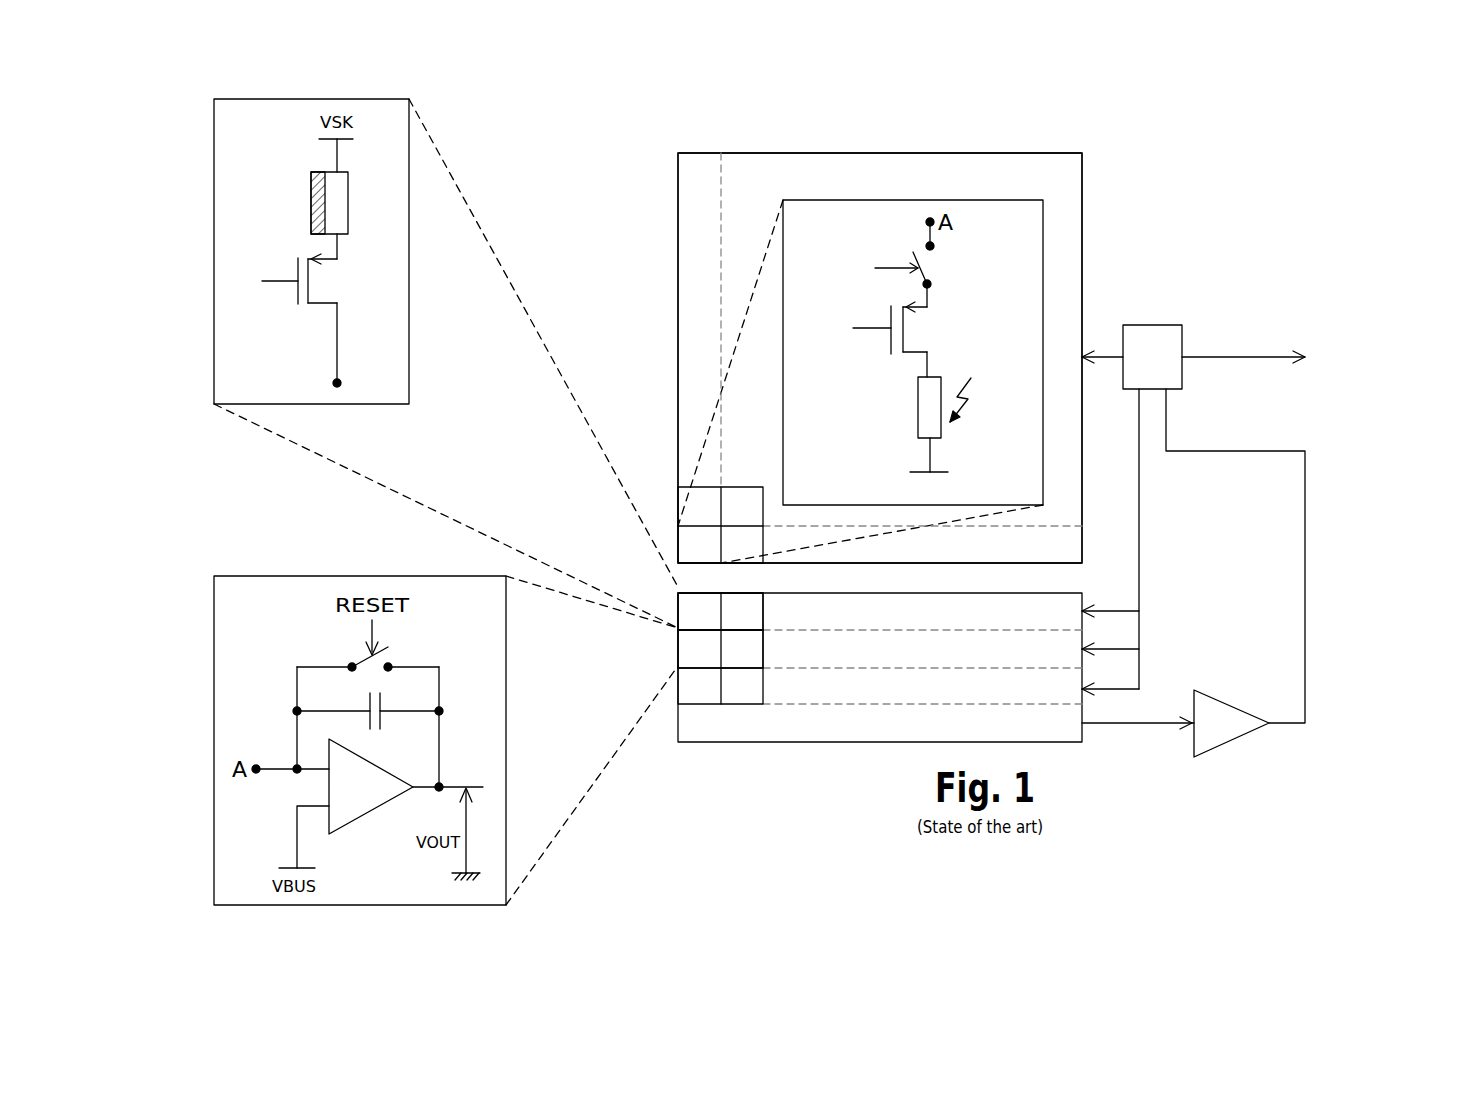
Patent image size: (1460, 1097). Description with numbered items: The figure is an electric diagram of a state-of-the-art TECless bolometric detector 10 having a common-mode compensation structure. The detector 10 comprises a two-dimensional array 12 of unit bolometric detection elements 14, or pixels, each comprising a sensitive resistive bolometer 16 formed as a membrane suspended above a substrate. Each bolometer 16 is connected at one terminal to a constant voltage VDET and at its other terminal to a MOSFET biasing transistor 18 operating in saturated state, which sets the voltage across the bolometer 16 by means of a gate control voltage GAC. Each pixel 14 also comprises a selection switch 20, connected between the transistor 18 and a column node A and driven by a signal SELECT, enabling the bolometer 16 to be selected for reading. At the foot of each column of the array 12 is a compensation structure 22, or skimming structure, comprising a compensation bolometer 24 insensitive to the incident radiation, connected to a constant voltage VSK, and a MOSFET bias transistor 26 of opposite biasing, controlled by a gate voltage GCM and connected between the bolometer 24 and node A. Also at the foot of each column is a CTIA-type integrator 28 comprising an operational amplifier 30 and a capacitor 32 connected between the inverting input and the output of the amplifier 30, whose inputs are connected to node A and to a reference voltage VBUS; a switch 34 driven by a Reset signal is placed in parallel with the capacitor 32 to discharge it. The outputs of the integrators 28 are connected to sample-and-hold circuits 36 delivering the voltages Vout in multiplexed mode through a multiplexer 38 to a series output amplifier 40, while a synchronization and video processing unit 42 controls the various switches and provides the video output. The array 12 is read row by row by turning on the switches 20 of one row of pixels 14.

The bolometric detector 10 is at (1069, 140).
The two-dimensional array 12 is at (1082, 283).
The unit bolometric detection element 14 is at (678, 540).
The sensitive resistive bolometer 16 is at (930, 397).
The MOSFET biasing transistor 18 is at (923, 328).
The selection switch 20 is at (922, 260).
The compensation structure 22 is at (214, 145).
The compensation bolometer 24 is at (333, 207).
The MOSFET bias transistor 26 is at (322, 279).
The integrator 28 is at (214, 637).
The operational amplifier 30 is at (358, 803).
The capacitor 32 is at (380, 720).
The switch 34 is at (388, 657).
The sample-and-hold circuit 36 is at (696, 704).
The multiplexer 38 is at (803, 720).
The series output amplifier 40 is at (1219, 730).
The synchronization and video processing unit 42 is at (1172, 375).